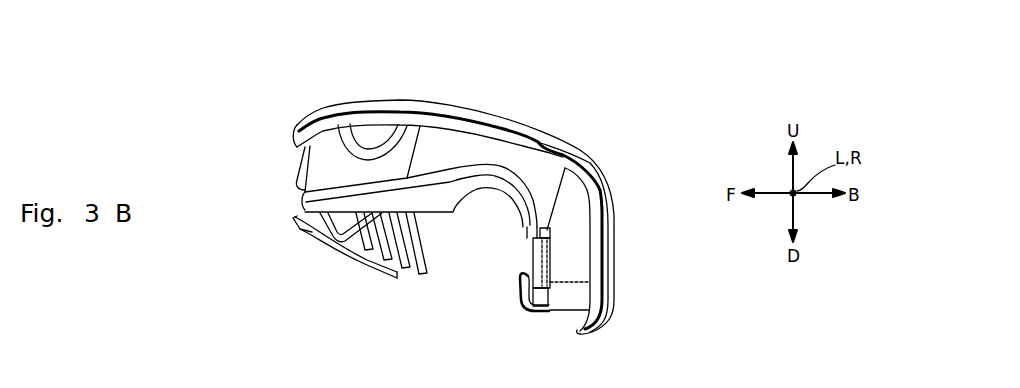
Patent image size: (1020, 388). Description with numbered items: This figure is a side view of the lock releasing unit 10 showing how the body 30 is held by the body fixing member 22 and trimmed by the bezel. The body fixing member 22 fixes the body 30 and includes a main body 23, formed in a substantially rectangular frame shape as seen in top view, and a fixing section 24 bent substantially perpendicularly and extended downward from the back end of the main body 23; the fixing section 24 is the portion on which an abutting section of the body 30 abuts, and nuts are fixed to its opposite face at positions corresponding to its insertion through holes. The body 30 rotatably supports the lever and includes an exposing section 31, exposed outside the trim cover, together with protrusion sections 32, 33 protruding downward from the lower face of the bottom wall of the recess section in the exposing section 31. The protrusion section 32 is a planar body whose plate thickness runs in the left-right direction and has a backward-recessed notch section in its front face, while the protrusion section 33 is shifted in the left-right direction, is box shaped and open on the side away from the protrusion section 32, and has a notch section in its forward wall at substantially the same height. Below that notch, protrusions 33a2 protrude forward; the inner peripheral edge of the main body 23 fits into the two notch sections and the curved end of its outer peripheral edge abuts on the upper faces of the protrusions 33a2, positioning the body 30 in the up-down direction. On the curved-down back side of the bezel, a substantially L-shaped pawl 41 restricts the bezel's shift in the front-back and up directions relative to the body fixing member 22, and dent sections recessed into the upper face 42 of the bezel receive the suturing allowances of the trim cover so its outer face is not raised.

The lock releasing unit 10 is at (226, 66).
The body fixing member 22 is at (469, 305).
The main body 23 is at (435, 205).
The fixing section 24 is at (533, 258).
The body 30 is at (624, 130).
The exposing section 31 is at (485, 118).
The protrusion section 32 is at (345, 222).
The protrusion section 33 is at (378, 250).
The protrusions 33a2 is at (297, 216).
The pawl 41 is at (525, 291).
The upper face 42 is at (407, 112).